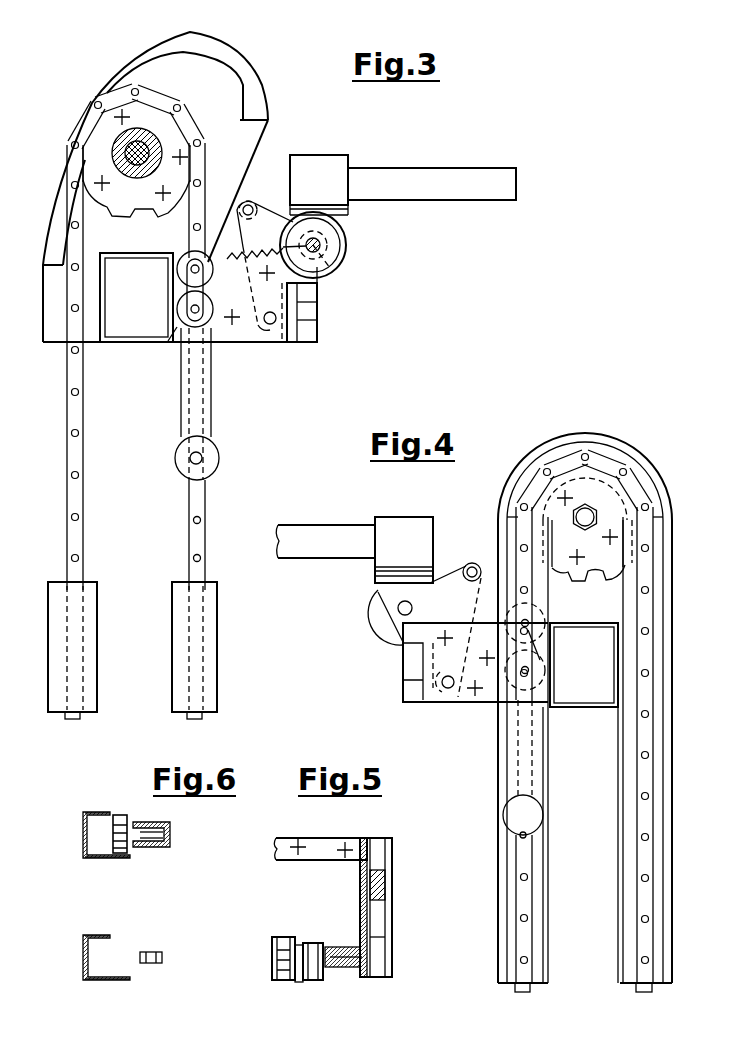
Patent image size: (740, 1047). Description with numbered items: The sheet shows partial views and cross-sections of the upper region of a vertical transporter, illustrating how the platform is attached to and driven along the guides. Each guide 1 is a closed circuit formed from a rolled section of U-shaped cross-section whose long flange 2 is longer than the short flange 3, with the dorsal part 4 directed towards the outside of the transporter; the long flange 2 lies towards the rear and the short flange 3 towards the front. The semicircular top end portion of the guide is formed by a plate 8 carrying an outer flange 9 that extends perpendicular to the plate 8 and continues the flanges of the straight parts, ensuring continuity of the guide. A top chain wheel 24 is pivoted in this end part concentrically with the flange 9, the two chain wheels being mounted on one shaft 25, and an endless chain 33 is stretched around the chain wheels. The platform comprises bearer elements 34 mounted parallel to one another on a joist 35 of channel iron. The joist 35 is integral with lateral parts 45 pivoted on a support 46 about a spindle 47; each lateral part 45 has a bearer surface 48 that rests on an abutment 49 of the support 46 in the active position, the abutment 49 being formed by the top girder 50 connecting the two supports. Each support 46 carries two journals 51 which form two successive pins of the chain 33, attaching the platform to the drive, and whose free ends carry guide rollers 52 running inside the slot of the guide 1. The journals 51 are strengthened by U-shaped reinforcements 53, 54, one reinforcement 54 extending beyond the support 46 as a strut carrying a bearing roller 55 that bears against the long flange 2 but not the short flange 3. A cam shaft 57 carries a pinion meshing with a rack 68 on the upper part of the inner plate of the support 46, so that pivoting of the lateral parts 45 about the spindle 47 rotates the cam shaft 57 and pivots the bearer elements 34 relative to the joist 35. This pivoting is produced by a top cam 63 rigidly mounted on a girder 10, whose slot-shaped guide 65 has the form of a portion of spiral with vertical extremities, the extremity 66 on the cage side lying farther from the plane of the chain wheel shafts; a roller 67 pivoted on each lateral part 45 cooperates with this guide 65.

In FIG. 3, the guide 1 is at (97, 613).
In FIG. 4, the guide 1 is at (632, 893).
In FIG. 6, the guide 1 is at (90, 843).
In FIG. 4, the long flange 2 is at (550, 854).
In FIG. 6, the long flange 2 is at (100, 860).
In FIG. 4, the short flange 3 is at (497, 854).
In FIG. 6, the short flange 3 is at (94, 810).
In FIG. 6, the dorsal part 4 is at (82, 831).
In FIG. 4, the plate 8 is at (645, 471).
In FIG. 4, the outer flange 9 is at (625, 452).
In FIG. 3, the girder 10 is at (136, 297).
In FIG. 4, the girder 10 is at (584, 665).
In FIG. 3, the top chain wheel 24 is at (136, 163).
In FIG. 4, the top chain wheel 24 is at (575, 575).
In FIG. 3, the shaft 25 is at (148, 140).
In FIG. 3, the endless chain 33 is at (67, 424).
In FIG. 4, the endless chain 33 is at (522, 950).
In FIG. 5, the endless chain 33 is at (345, 968).
In FIG. 6, the endless chain 33 is at (160, 848).
In FIG. 3, the bearer element 34 is at (430, 190).
In FIG. 4, the bearer element 34 is at (325, 541).
In FIG. 3, the joist 35 is at (306, 155).
In FIG. 4, the joist 35 is at (393, 521).
In FIG. 3, the lateral part 45 is at (262, 212).
In FIG. 4, the lateral part 45 is at (377, 591).
In FIG. 5, the lateral part 45 is at (393, 878).
In FIG. 3, the support 46 is at (247, 330).
In FIG. 4, the support 46 is at (466, 702).
In FIG. 5, the support 46 is at (391, 945).
In FIG. 3, the spindle 47 is at (270, 325).
In FIG. 4, the spindle 47 is at (443, 690).
In FIG. 4, the bearer surface 48 is at (424, 652).
In FIG. 4, the abutment 49 is at (417, 637).
In FIG. 3, the girder 50 is at (326, 296).
In FIG. 5, the girder 50 is at (312, 845).
In FIG. 4, the journal 51 is at (534, 655).
In FIG. 5, the journal 51 is at (340, 947).
In FIG. 3, the guide roller 52 is at (217, 284).
In FIG. 4, the guide roller 52 is at (530, 612).
In FIG. 5, the guide roller 52 is at (286, 938).
In FIG. 5, the U-shaped reinforcement 53 is at (313, 943).
In FIG. 3, the U-shaped reinforcement 54 is at (183, 396).
In FIG. 4, the U-shaped reinforcement 54 is at (512, 762).
In FIG. 5, the U-shaped reinforcement 54 is at (371, 976).
In FIG. 6, the U-shaped reinforcement 54 is at (170, 831).
In FIG. 3, the bearing roller 55 is at (175, 457).
In FIG. 4, the bearing roller 55 is at (504, 813).
In FIG. 5, the bearing roller 55 is at (299, 982).
In FIG. 6, the bearing roller 55 is at (125, 813).
In FIG. 3, the cam shaft 57 is at (322, 246).
In FIG. 4, the cam shaft 57 is at (381, 613).
In FIG. 3, the top cam 63 is at (180, 187).
In FIG. 3, the guide 65 is at (259, 97).
In FIG. 3, the extremity 66 is at (246, 129).
In FIG. 3, the roller 67 is at (249, 204).
In FIG. 4, the roller 67 is at (470, 561).
In FIG. 3, the rack 68 is at (255, 241).
In FIG. 5, the rack 68 is at (364, 890).